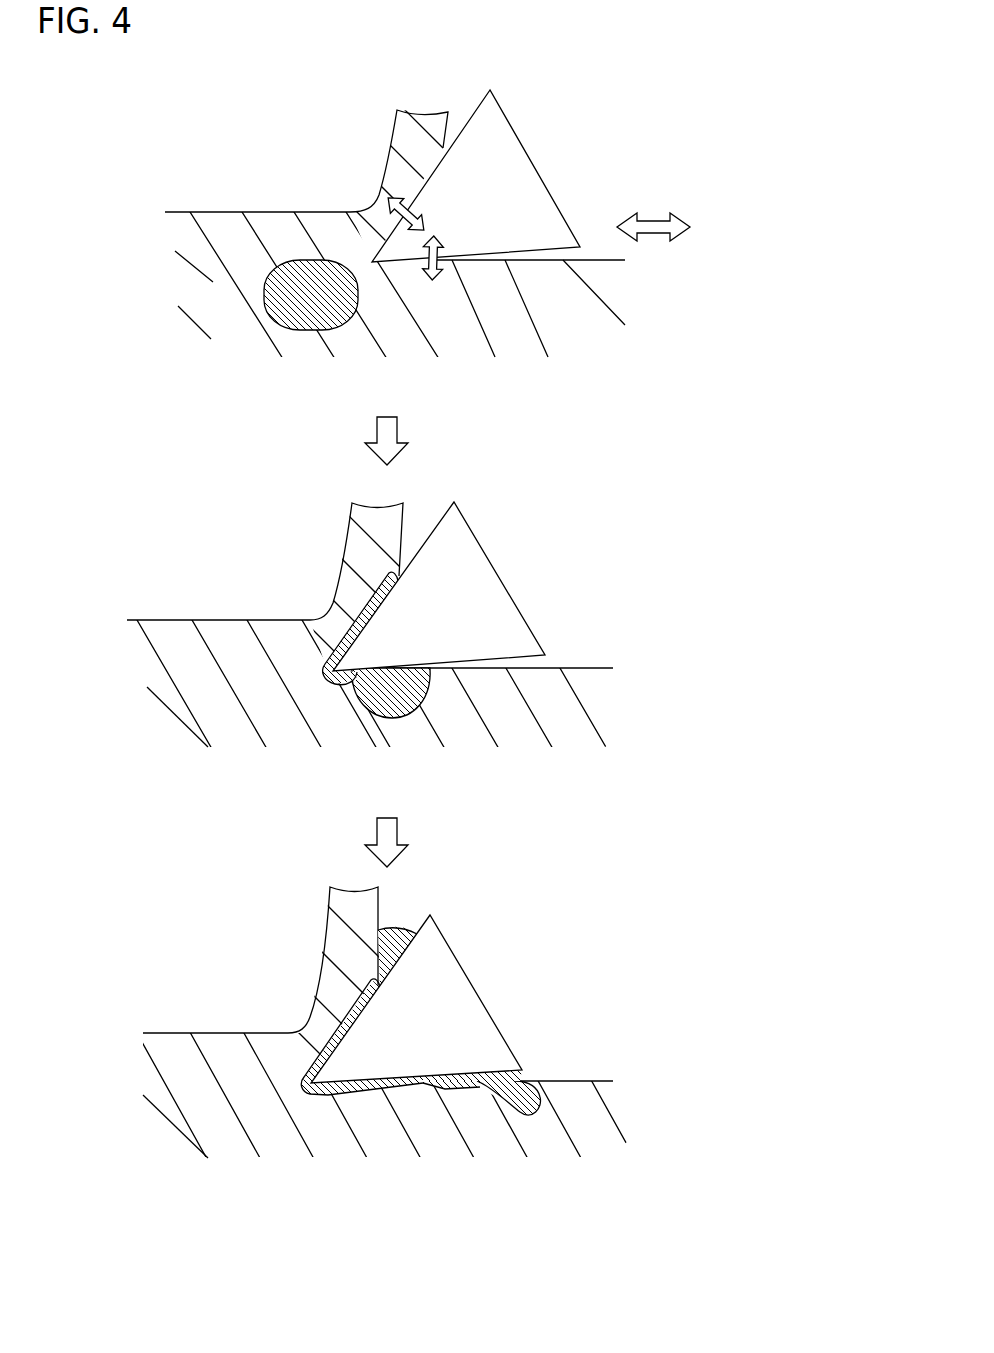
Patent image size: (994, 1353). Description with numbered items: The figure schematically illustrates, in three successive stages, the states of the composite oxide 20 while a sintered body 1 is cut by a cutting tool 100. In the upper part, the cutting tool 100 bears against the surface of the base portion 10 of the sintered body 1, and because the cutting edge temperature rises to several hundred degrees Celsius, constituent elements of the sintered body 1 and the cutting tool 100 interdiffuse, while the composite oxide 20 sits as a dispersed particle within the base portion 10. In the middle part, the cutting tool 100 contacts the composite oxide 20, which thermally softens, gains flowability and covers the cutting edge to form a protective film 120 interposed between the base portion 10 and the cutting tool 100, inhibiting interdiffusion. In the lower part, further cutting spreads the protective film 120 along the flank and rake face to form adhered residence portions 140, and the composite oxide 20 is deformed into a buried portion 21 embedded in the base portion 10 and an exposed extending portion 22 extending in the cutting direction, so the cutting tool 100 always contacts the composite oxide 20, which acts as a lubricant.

The sintered body 1 is at (208, 178).
The base portion 10 is at (217, 267).
The composite oxide 20 is at (302, 312).
The buried portion 21 is at (530, 1116).
The exposed extending portion 22 is at (453, 1088).
The cutting tool 100 is at (507, 162).
The protective film 120 is at (342, 648).
The residence portion 140 is at (390, 930).